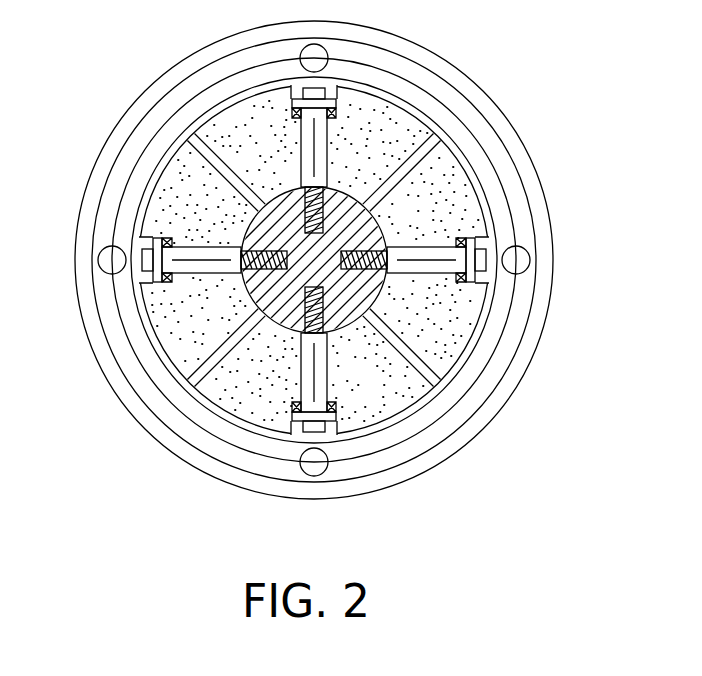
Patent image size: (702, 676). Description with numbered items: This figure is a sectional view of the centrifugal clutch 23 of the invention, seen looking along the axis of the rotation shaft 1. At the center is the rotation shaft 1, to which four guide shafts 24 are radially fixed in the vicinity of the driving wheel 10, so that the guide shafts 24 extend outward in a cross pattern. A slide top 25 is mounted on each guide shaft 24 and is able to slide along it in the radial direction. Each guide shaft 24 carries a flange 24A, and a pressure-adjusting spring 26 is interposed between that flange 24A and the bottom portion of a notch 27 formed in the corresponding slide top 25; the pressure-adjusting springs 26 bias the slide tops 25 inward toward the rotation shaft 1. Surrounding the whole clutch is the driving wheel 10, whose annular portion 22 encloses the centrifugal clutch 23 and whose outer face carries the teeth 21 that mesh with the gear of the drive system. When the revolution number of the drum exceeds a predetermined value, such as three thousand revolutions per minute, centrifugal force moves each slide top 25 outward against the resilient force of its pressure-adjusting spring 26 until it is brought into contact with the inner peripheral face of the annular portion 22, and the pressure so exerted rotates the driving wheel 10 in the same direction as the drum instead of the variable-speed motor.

The driving wheel 10 is at (496, 69).
The rotation shaft 1 is at (372, 232).
The teeth 21 is at (395, 40).
The annular portion 22 is at (485, 165).
The centrifugal clutch 23 is at (508, 212).
The guide shaft 24 is at (328, 150).
The flange 24A is at (293, 103).
The slide top 25 is at (233, 123).
The pressure-adjusting spring 26 is at (284, 415).
The notch 27 is at (330, 428).